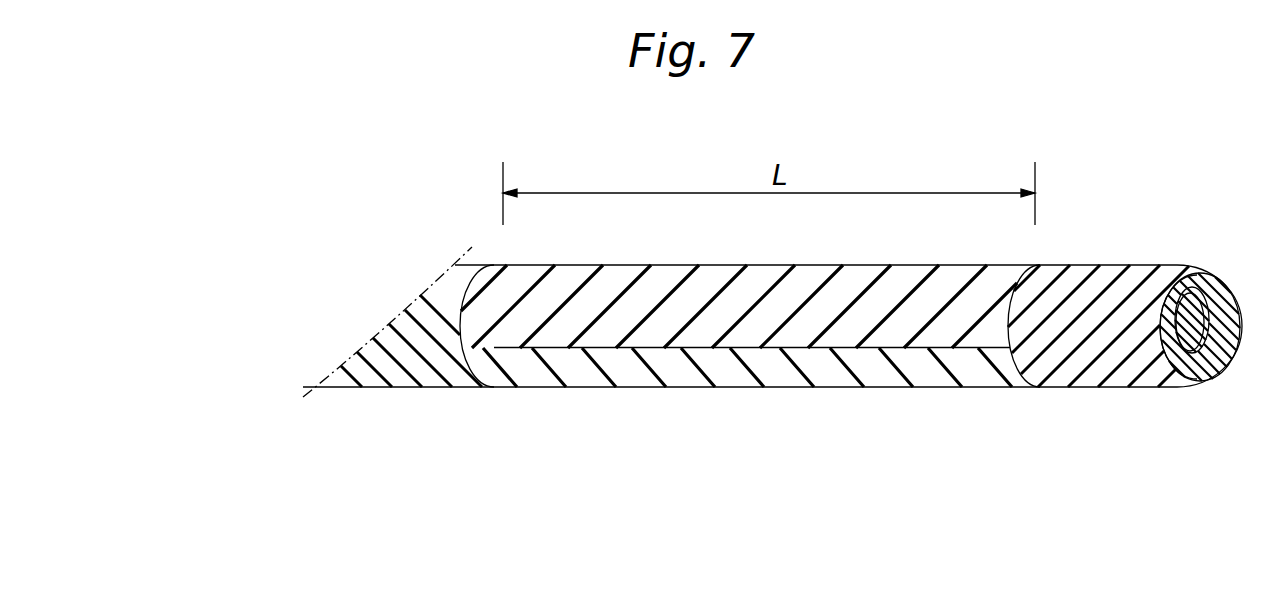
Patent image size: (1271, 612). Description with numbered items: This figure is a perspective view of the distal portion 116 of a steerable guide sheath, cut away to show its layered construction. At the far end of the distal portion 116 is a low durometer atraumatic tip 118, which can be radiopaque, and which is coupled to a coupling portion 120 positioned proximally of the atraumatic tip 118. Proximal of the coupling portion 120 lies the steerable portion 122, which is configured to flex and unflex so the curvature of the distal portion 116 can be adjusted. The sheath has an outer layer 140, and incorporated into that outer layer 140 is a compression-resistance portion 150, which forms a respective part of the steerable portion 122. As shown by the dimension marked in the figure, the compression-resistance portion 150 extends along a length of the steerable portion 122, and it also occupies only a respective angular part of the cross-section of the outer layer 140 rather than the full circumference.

The distal portion 116 is at (447, 388).
The atraumatic tip portion 118 is at (1175, 272).
The coupling portion 120 is at (1080, 272).
The steerable portion 122 is at (627, 388).
The outer layer 140 is at (850, 387).
The compression-resistance portion 150 is at (723, 272).